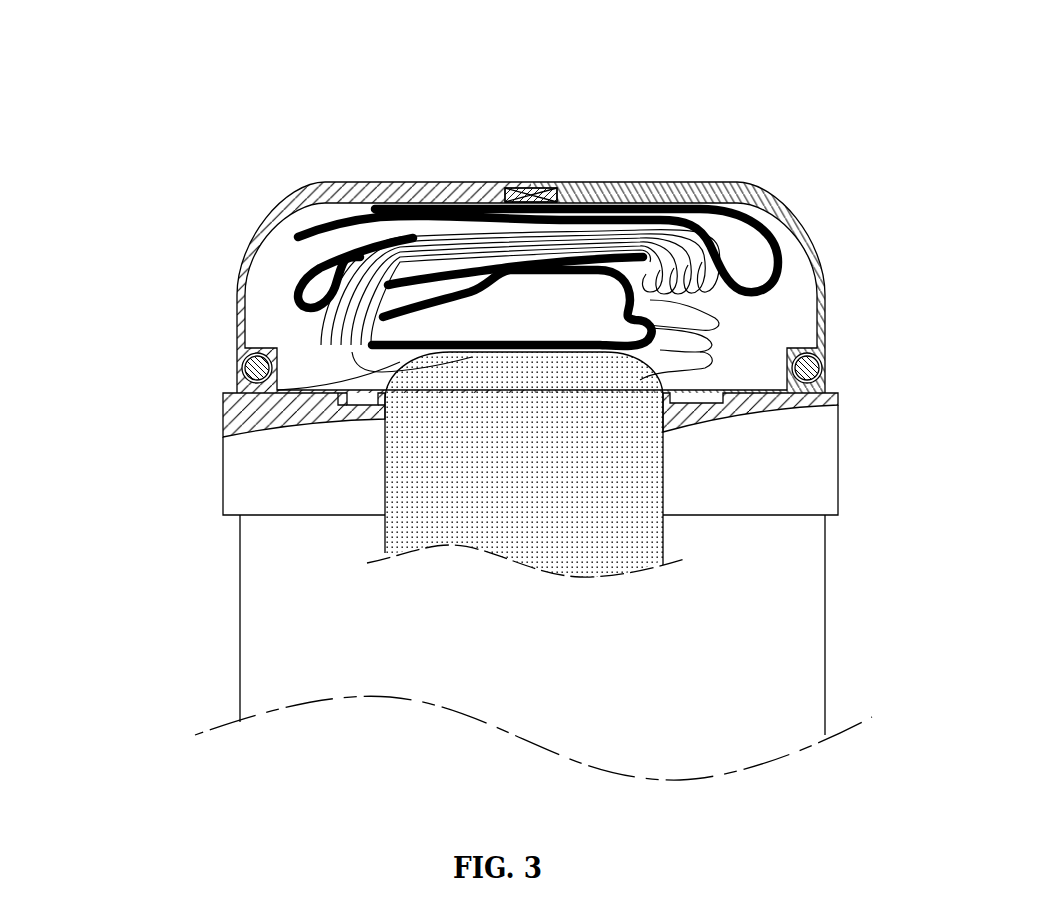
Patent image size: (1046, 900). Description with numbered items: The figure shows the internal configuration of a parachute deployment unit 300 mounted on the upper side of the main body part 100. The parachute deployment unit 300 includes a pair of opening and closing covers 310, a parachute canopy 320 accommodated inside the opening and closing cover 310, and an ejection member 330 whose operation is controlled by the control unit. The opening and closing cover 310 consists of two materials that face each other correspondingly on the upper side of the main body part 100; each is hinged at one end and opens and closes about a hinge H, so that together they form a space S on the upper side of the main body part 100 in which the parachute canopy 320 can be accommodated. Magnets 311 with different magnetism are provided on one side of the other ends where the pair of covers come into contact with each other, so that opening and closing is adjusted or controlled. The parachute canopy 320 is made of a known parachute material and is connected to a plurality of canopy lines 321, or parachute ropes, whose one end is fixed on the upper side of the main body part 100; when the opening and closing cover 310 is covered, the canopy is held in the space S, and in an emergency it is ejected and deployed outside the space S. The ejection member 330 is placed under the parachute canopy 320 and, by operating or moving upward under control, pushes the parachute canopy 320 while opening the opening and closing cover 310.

The main body part 100 is at (260, 607).
The parachute deployment unit 300 is at (182, 112).
The opening and closing cover 310 is at (438, 186).
The magnet 311 is at (552, 188).
The parachute canopy 320 is at (770, 241).
The canopy lines 321 is at (295, 318).
The ejection member 330 is at (407, 470).
The space S is at (777, 318).
The hinge H is at (826, 362).